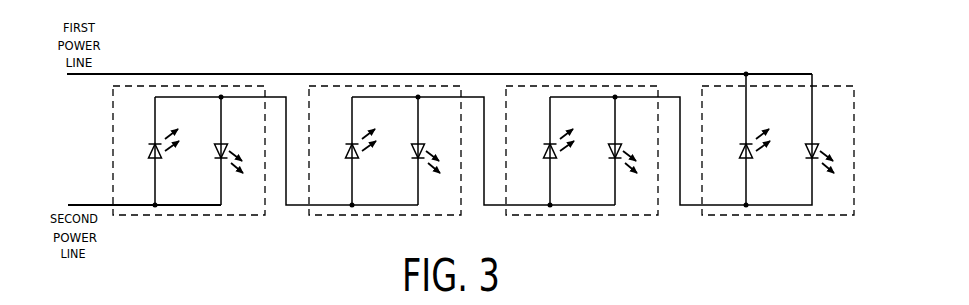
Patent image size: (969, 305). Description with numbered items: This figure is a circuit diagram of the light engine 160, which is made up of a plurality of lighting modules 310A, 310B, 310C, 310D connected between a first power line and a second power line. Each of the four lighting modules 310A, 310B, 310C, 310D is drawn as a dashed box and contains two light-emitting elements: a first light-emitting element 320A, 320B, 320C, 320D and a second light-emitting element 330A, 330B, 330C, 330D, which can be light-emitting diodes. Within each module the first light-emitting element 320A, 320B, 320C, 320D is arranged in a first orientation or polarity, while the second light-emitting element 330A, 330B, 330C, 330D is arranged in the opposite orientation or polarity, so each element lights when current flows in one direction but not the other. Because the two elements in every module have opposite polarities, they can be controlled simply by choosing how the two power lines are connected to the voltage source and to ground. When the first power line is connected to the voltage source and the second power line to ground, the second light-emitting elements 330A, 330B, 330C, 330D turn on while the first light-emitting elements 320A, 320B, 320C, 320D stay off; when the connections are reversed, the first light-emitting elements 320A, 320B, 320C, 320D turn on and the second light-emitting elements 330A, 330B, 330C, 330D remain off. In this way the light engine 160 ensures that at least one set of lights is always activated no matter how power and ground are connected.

The light engine 160 is at (463, 51).
The lighting module 310A is at (177, 216).
The lighting module 310B is at (357, 216).
The lighting module 310C is at (568, 216).
The lighting module 310D is at (751, 216).
The first light-emitting element 320A is at (148, 136).
The first light-emitting element 320B is at (345, 136).
The first light-emitting element 320C is at (543, 136).
The first light-emitting element 320D is at (739, 136).
The second light-emitting element 330A is at (238, 144).
The second light-emitting element 330B is at (435, 144).
The second light-emitting element 330C is at (632, 144).
The second light-emitting element 330D is at (829, 144).